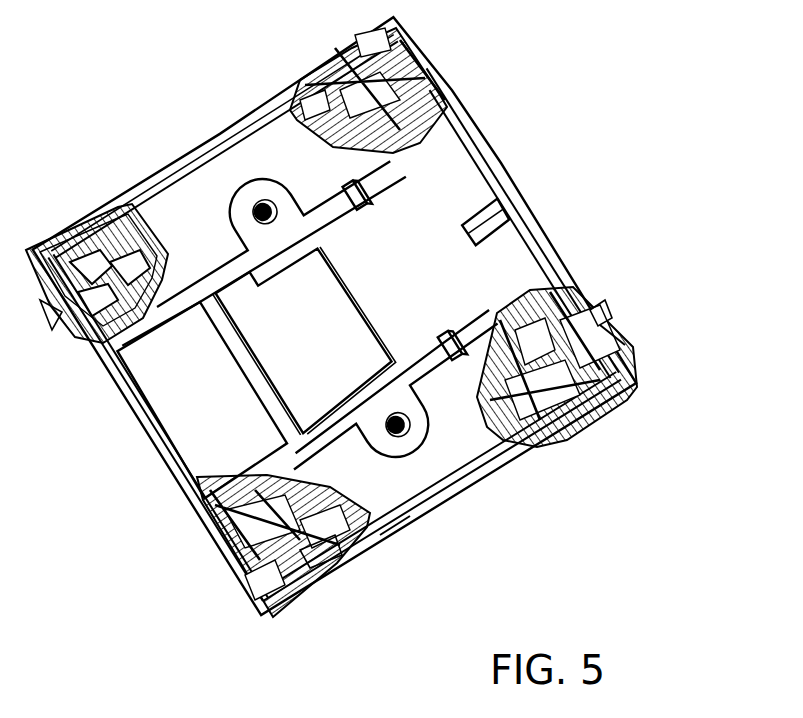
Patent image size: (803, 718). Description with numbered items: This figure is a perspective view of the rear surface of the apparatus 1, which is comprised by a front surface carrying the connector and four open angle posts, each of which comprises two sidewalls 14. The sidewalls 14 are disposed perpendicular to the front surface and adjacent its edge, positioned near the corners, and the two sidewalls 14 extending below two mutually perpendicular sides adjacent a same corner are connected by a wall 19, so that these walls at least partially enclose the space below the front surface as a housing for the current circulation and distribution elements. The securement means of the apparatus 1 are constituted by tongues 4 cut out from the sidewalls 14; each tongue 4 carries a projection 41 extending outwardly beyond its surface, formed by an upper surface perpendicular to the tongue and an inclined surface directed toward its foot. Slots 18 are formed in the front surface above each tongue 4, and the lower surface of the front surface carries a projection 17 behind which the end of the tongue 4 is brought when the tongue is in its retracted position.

The apparatus 1 is at (211, 128).
The tongue 4 is at (583, 335).
The sidewall 14 is at (87, 223).
The projection 17 is at (254, 706).
The slot 18 is at (320, 567).
The wall 19 is at (396, 530).
The projection 41 is at (587, 313).